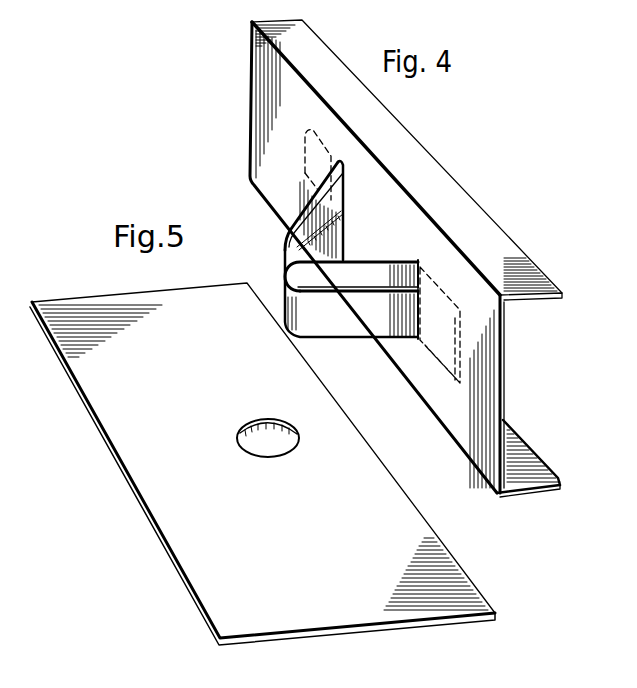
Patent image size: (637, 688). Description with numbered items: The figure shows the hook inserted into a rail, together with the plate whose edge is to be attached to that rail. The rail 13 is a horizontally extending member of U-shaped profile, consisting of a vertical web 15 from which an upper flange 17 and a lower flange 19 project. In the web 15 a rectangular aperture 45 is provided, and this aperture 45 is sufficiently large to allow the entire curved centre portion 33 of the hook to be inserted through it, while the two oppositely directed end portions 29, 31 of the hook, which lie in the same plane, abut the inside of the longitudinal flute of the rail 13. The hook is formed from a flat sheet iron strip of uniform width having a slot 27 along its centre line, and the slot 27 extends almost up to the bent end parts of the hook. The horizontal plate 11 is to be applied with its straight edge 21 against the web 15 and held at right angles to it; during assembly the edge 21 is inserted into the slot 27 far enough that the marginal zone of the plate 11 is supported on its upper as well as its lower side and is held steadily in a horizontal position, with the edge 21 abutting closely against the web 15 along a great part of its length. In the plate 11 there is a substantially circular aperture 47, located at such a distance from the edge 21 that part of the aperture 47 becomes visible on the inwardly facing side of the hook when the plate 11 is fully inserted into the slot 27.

In FIG. 5, the horizontal plate 11 is at (207, 378).
In FIG. 4, the rail 13 is at (297, 152).
In FIG. 4, the vertical web 15 is at (503, 382).
In FIG. 4, the upper flange 17 is at (532, 297).
In FIG. 4, the lower flange 19 is at (527, 490).
In FIG. 5, the straight edge 21 is at (452, 548).
In FIG. 4, the slot 27 is at (322, 293).
In FIG. 4, the end portion 29 is at (305, 172).
In FIG. 4, the end portion 31 is at (436, 380).
In FIG. 4, the curved centre portion 33 is at (357, 323).
In FIG. 4, the rectangular aperture 45 is at (377, 225).
In FIG. 5, the circular aperture 47 is at (250, 440).